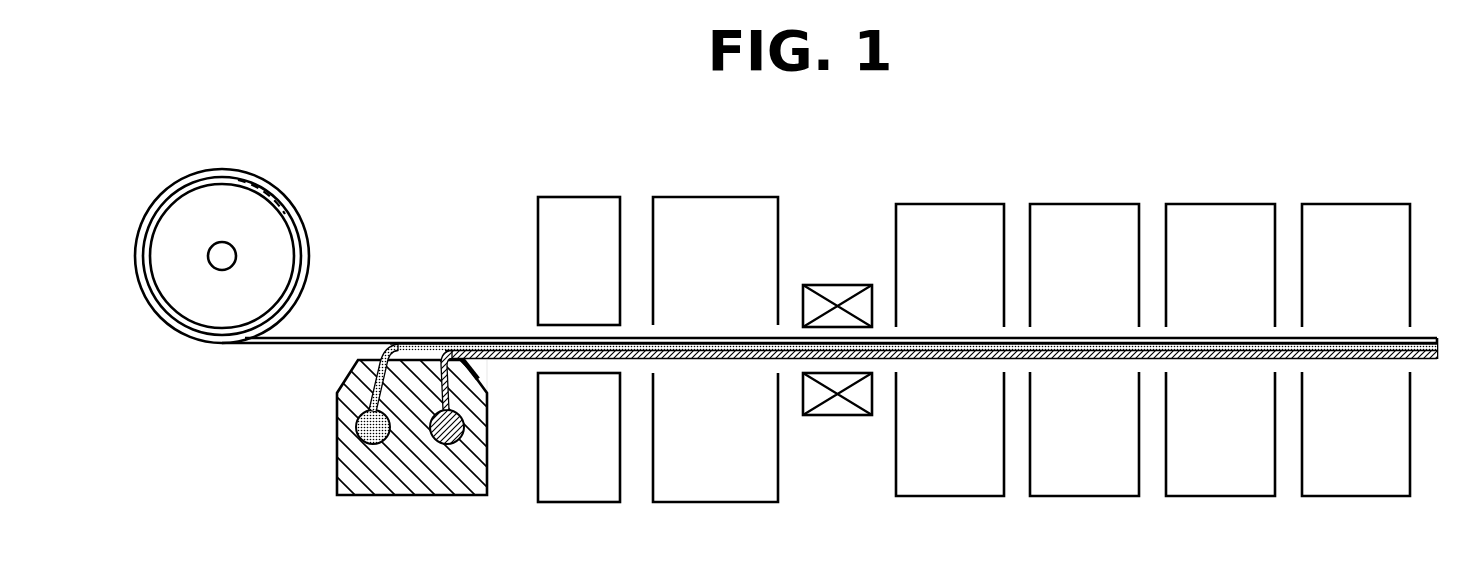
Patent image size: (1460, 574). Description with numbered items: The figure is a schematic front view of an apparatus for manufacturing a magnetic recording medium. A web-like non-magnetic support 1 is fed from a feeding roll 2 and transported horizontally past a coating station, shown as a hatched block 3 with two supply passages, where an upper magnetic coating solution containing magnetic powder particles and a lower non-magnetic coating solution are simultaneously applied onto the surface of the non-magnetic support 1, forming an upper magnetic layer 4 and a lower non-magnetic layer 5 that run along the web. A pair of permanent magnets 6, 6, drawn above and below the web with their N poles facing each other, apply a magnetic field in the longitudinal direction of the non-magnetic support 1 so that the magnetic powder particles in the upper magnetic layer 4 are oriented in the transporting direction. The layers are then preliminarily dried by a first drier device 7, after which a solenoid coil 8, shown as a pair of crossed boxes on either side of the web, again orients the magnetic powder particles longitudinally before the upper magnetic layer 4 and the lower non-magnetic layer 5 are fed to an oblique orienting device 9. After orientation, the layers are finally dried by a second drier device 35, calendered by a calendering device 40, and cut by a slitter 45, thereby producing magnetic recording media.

The non-magnetic support 1 is at (327, 338).
The feeding roll 2 is at (290, 250).
The extrusion coating head 3 is at (333, 468).
The upper magnetic layer 4 is at (505, 363).
The lower non-magnetic layer 5 is at (483, 347).
The permanent magnets 6 is at (545, 210).
The first drier device 7 is at (713, 205).
The solenoid coil 8 is at (842, 290).
The oblique orienting device 9 is at (950, 225).
The second drier device 35 is at (1087, 223).
The calendering device 40 is at (1222, 223).
The slitter 45 is at (1358, 223).